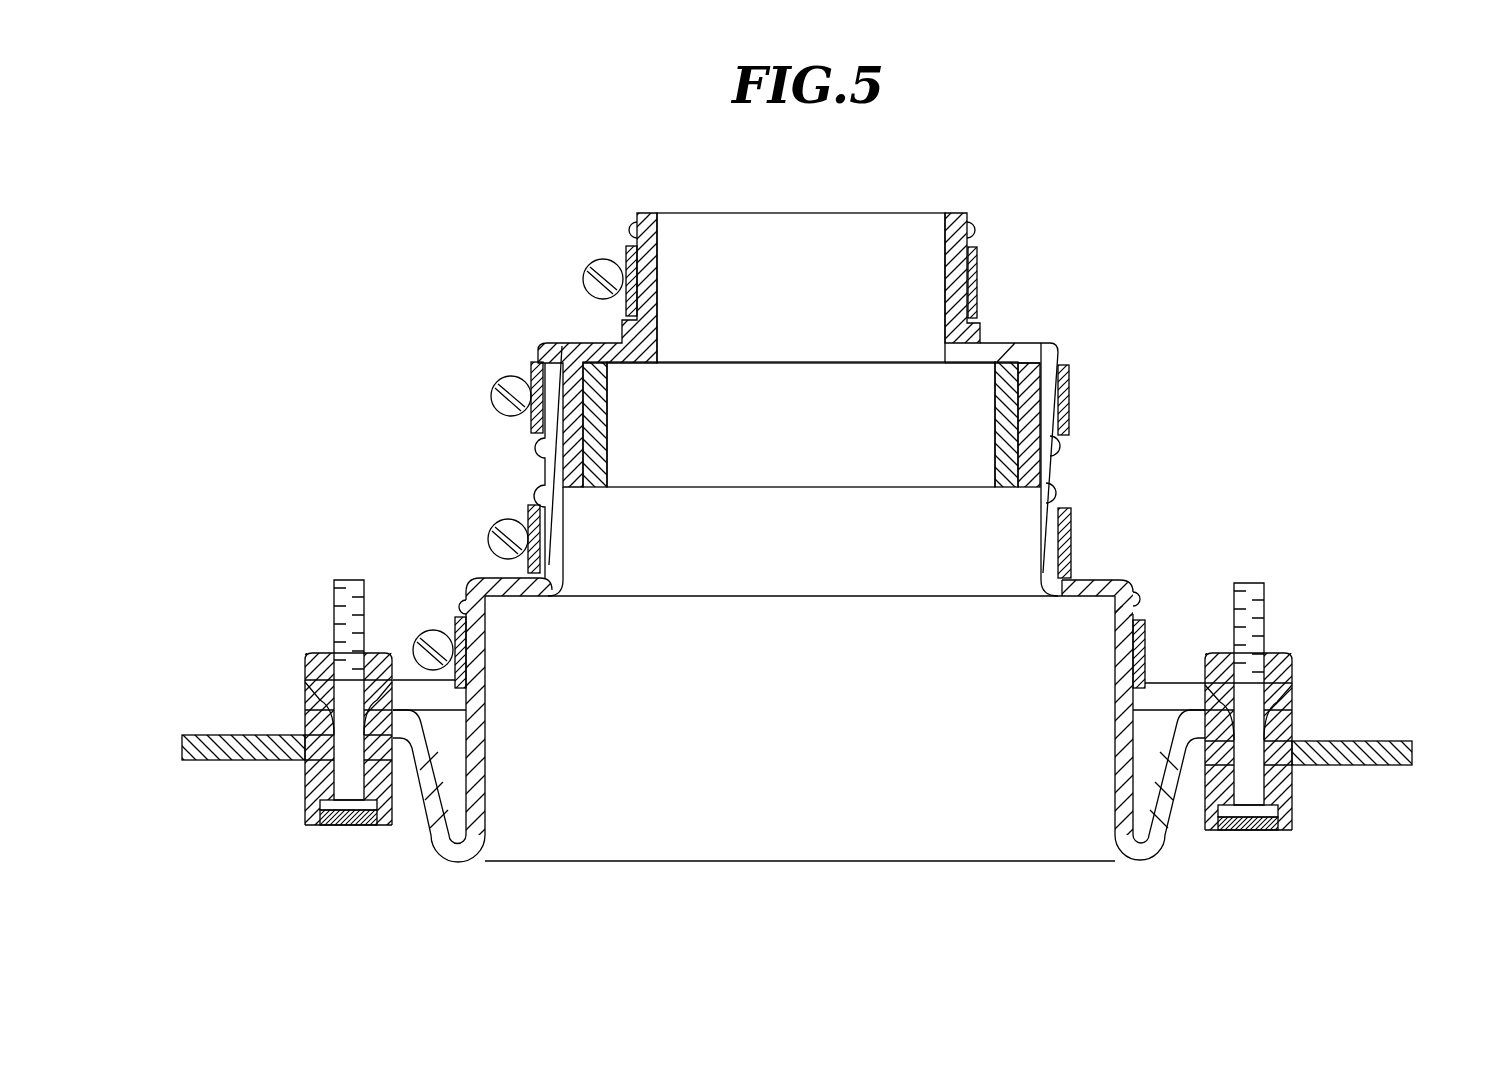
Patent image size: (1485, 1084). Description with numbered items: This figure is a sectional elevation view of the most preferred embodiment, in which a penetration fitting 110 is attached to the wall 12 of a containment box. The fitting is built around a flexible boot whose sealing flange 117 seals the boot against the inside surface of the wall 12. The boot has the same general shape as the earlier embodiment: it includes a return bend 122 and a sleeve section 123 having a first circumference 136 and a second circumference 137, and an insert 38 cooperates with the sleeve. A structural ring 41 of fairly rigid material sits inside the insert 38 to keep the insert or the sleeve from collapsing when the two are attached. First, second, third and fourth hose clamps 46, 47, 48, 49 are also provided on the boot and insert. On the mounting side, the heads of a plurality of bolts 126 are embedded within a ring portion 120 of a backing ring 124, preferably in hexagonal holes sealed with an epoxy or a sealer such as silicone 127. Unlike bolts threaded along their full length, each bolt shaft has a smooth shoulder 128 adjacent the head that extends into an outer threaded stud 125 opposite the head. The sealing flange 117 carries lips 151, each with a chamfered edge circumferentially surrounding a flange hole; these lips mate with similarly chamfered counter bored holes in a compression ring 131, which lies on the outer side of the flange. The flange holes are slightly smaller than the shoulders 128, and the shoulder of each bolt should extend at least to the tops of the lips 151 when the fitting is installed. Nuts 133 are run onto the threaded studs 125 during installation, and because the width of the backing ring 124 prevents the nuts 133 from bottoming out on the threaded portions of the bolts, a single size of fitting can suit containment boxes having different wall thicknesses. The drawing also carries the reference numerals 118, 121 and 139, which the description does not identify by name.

The wall 12 is at (1338, 721).
The first insert 38 is at (1015, 345).
The structural ring 41 is at (1003, 484).
The first hose clamp 46 is at (455, 622).
The second hose clamp 47 is at (528, 508).
The third hose clamp 48 is at (531, 366).
The fourth hose clamp 49 is at (626, 251).
The penetration fitting 110 is at (1155, 561).
The sealing flange 117 is at (307, 735).
The right terminal plate 118 is at (1293, 728).
The ring portion 120 is at (1290, 830).
The housing bottom 121 is at (1172, 842).
The return bend 122 is at (452, 860).
The sleeve section 123 is at (1110, 820).
The backing ring 124 is at (320, 805).
The outer threaded stud 125 is at (330, 636).
The bolts 126 is at (320, 818).
The silicone 127 is at (333, 828).
The smooth shoulder 128 is at (345, 775).
The compression ring 131 is at (306, 692).
The nuts 133 is at (306, 668).
The first circumference 136 is at (1262, 620).
The second circumference 137 is at (1042, 467).
The cup wall 139 is at (1045, 353).
The lips 151 is at (325, 705).